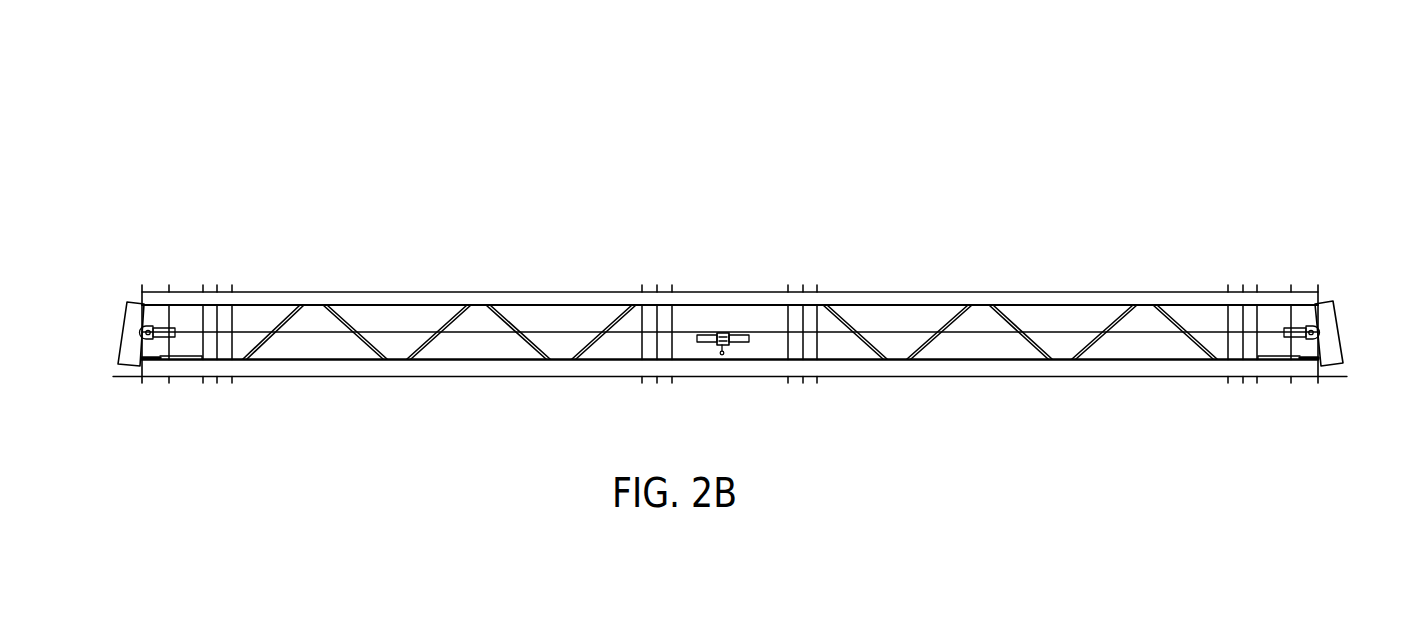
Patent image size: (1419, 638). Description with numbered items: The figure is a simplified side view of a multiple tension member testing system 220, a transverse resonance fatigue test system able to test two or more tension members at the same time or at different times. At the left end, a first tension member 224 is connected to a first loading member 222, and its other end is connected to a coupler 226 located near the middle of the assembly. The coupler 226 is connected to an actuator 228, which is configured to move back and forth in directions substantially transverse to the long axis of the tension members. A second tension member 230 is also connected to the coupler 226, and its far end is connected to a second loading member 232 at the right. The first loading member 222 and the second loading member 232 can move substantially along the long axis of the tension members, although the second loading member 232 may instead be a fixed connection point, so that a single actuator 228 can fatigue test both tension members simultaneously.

The multiple tension member testing system 220 is at (719, 90).
The first loading member 222 is at (123, 332).
The first tension member 224 is at (385, 333).
The coupler 226 is at (727, 333).
The actuator 228 is at (722, 356).
The second tension member 230 is at (893, 337).
The second loading member 232 is at (1338, 333).